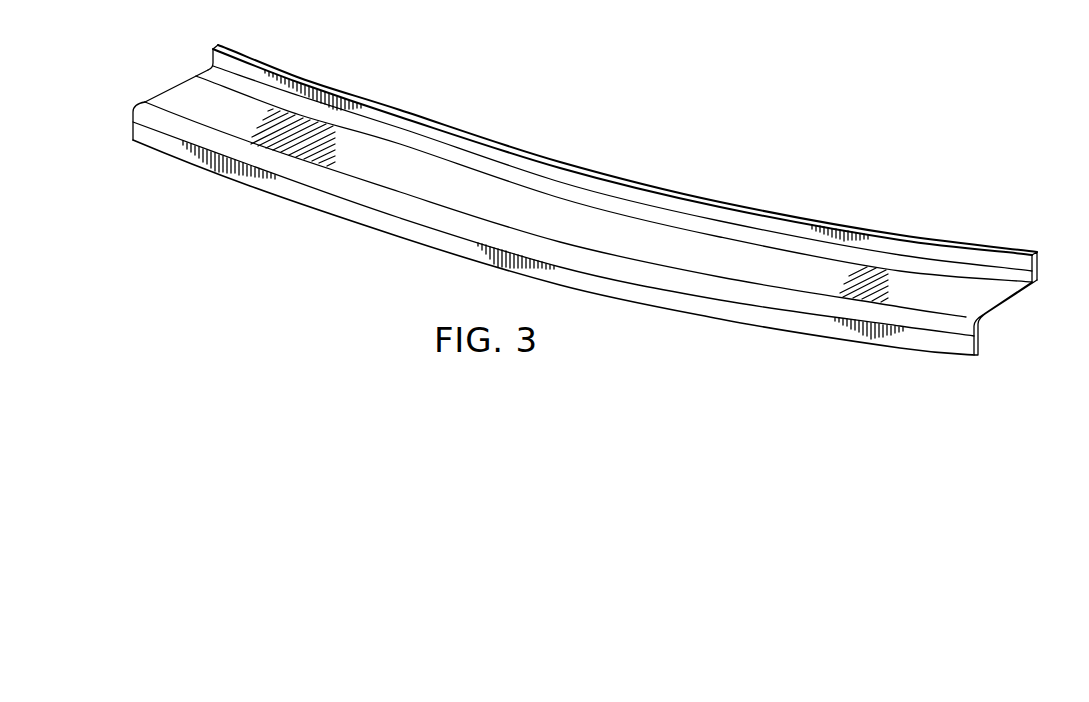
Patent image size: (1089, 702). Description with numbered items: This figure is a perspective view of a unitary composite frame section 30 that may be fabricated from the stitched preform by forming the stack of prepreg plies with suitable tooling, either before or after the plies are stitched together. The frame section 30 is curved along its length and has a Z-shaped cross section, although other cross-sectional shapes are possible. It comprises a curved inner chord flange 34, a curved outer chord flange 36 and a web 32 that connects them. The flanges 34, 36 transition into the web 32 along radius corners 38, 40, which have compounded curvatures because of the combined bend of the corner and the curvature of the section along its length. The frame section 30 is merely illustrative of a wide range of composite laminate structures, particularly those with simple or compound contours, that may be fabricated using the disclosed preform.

The frame section 30 is at (639, 89).
The web 32 is at (190, 93).
The inner chord flange 34 is at (711, 214).
The outer chord flange 36 is at (764, 321).
The radius corner 38 is at (1038, 283).
The radius corner 40 is at (142, 111).